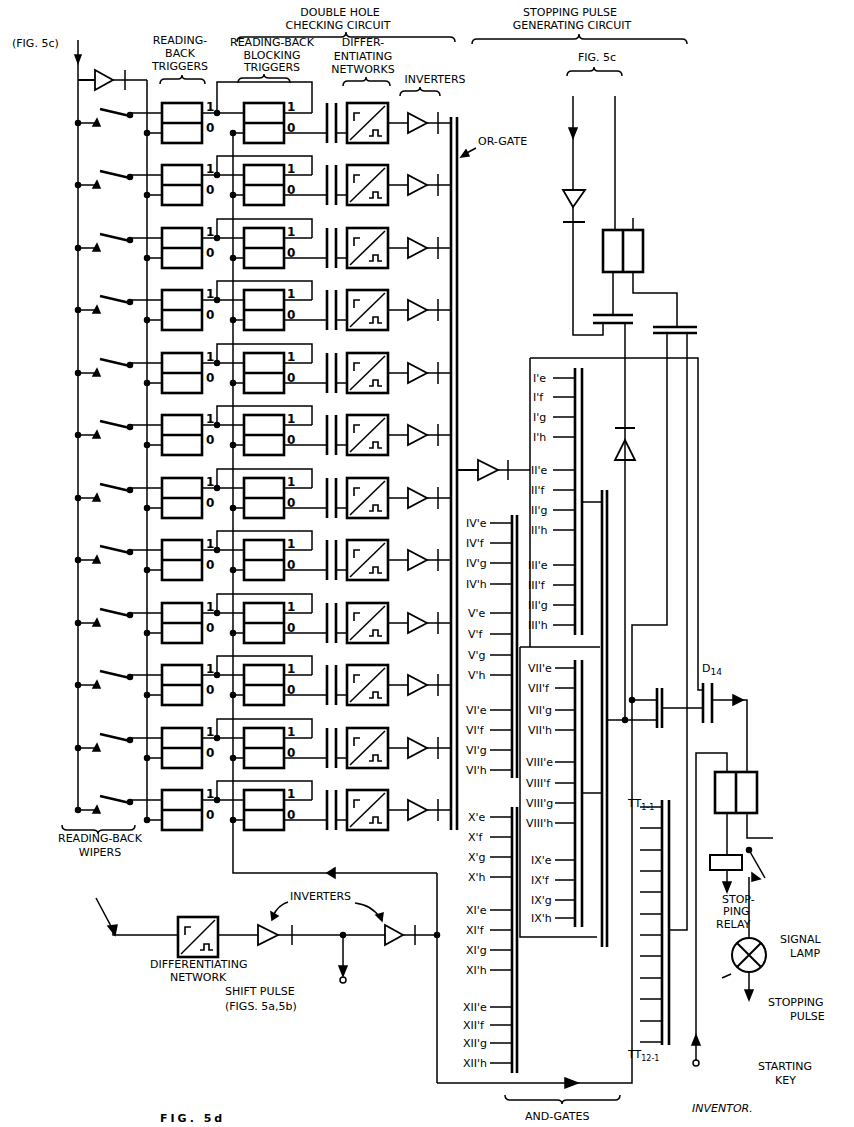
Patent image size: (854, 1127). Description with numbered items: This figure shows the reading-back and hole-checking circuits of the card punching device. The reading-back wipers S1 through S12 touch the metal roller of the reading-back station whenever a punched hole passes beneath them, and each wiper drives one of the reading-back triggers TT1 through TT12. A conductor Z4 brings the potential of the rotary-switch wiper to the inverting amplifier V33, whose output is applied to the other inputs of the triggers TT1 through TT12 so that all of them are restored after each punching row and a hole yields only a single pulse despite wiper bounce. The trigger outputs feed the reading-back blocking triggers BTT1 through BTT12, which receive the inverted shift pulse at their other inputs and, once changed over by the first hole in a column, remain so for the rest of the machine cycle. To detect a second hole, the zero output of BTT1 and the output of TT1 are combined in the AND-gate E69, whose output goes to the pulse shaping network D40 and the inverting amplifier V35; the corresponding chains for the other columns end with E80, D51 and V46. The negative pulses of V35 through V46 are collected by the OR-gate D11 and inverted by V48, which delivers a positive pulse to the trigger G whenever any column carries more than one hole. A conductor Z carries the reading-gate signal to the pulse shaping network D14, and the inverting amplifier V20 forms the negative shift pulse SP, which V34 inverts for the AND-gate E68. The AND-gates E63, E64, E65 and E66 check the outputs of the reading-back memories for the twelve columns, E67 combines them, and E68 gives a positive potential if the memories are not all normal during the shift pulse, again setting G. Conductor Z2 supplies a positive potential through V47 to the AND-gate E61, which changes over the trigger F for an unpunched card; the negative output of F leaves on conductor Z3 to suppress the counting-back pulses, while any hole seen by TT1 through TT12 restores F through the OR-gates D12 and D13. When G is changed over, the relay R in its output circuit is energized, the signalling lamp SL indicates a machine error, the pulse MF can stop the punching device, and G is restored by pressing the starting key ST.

The input line from FIG. 5c Z4 is at (87, 58).
The inverting amplifier V33 is at (112, 73).
The reading-back wiper S1 is at (119, 122).
The reading-back wiper S12 is at (119, 809).
The reading-back trigger TT1 is at (182, 114).
The reading-back trigger TT12 is at (180, 820).
The reading-back blocking trigger BTT1 is at (264, 114).
The reading-back blocking trigger BTT12 is at (263, 820).
The AND-gate E69 is at (327, 115).
The AND-gate E80 is at (327, 820).
The pulse shaping network D40 is at (367, 115).
The pulse shaping network D51 is at (367, 820).
The inverting amplifier V35 is at (428, 117).
The inverting amplifier V46 is at (427, 822).
The OR-gate D11 is at (457, 459).
The inverting amplifier V48 is at (493, 463).
The input from FIG. 5a Z is at (132, 907).
The pulse shaping network D14 is at (198, 929).
The inverting amplifier V20 is at (321, 928).
The inverting amplifier V34 is at (411, 928).
The shift pulse SP is at (345, 967).
The conductor Z2 is at (573, 135).
The conductor Z3 is at (616, 155).
The inverting amplifier V47 is at (575, 262).
The trigger F is at (630, 243).
The AND-gate E61 is at (607, 496).
The OR-gate D13 is at (570, 677).
The AND-gate E63 is at (579, 501).
The AND-gate E64 is at (504, 639).
The AND-gate E65 is at (572, 787).
The AND-gate E66 is at (503, 932).
The AND-gate E67 is at (619, 712).
The AND-gate E68 is at (667, 700).
The OR-gate D12 is at (662, 914).
The trigger G is at (728, 792).
The relay R is at (726, 852).
The signalling lamp SL is at (735, 960).
The stopping pulse MF is at (748, 994).
The starting key ST is at (706, 920).